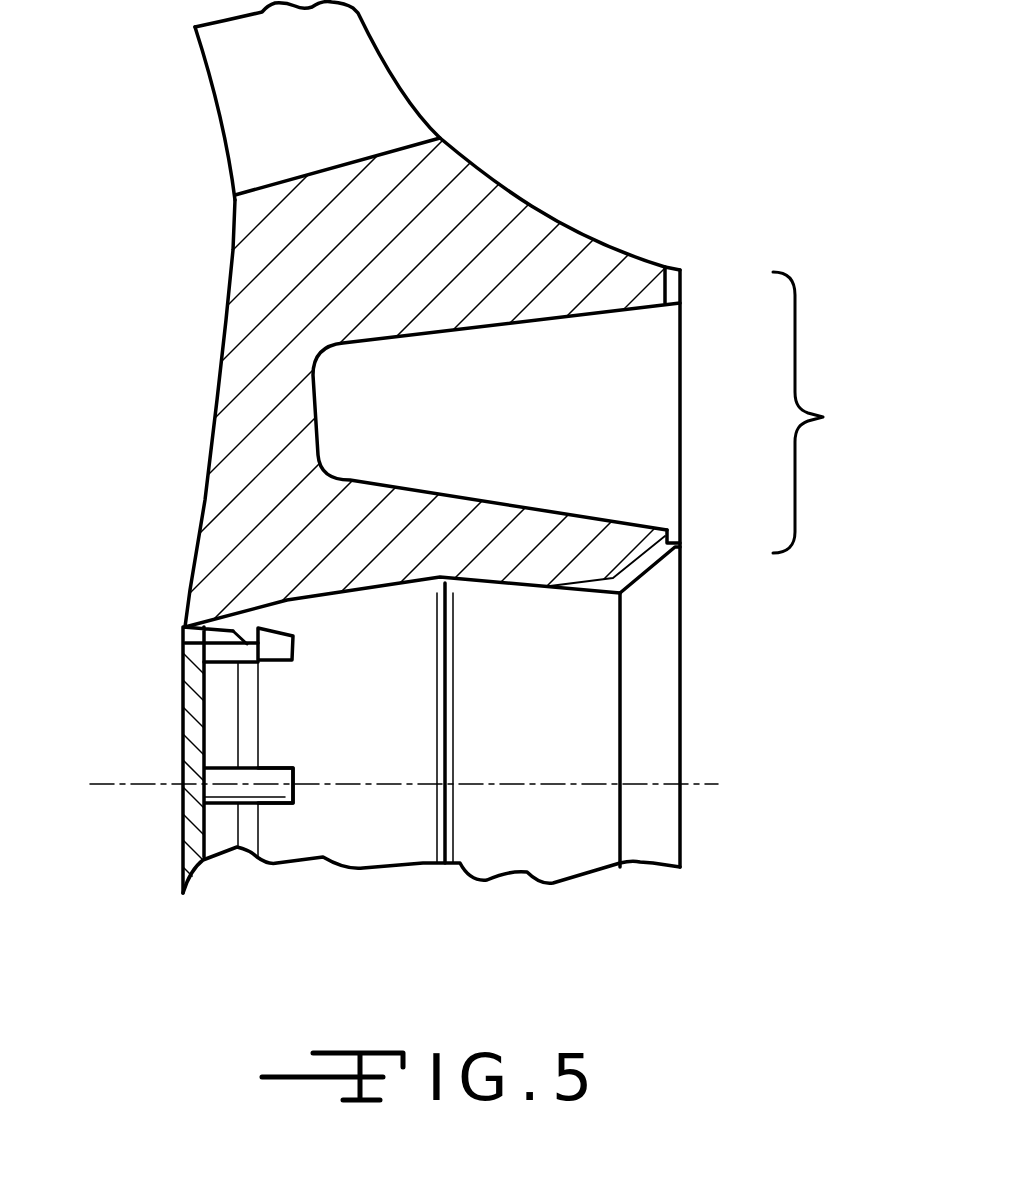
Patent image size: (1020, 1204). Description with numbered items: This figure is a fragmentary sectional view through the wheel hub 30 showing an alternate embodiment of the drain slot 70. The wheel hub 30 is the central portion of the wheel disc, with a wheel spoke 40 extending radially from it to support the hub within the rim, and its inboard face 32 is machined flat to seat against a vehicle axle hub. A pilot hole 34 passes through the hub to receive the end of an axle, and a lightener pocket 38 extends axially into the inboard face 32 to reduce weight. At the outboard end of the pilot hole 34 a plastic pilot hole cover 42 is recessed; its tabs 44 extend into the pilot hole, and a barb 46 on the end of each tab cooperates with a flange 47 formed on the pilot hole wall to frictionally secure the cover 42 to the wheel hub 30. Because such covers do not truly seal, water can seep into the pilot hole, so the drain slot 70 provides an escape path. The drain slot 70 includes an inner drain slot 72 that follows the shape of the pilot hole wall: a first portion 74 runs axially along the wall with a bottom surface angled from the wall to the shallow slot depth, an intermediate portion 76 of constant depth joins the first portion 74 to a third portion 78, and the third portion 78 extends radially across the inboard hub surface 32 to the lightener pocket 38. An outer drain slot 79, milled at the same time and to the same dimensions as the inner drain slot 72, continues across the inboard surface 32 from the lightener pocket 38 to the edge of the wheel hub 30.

The wheel hub 30 is at (432, 182).
The inboard face 32 is at (682, 703).
The pilot hole 34 is at (548, 728).
The lightener pocket 38 is at (518, 430).
The wheel spoke 40 is at (367, 90).
The pilot hole cover 42 is at (190, 697).
The tab 44 is at (247, 653).
The barb 46 is at (278, 643).
The flange 47 is at (247, 632).
The drain slot 70 is at (821, 412).
The inner drain slot 72 is at (688, 586).
The first portion 74 is at (597, 583).
The intermediate portion 76 is at (643, 572).
The third portion 78 is at (680, 538).
The outer drain slot 79 is at (673, 284).